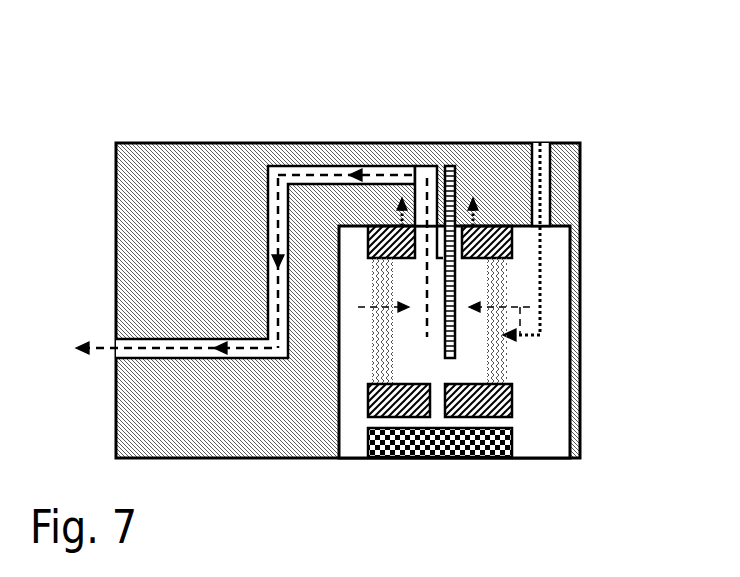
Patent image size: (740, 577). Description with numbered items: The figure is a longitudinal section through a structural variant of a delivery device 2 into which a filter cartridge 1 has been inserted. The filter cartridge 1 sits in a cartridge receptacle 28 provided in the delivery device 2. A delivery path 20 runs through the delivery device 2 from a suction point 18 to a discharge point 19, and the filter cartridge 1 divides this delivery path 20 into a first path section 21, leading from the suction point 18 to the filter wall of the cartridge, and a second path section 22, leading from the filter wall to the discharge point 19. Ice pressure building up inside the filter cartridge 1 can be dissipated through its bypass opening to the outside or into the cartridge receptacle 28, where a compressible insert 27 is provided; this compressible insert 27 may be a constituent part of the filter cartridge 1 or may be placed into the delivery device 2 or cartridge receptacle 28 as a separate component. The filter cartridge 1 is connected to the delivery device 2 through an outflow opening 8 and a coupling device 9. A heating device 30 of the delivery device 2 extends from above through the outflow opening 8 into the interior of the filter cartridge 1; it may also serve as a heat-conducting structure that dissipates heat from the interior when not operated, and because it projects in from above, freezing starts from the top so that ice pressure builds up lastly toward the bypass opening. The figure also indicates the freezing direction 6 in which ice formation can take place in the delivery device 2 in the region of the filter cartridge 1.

The filter cartridge 1 is at (512, 397).
The delivery device 2 is at (592, 120).
The freezing direction 6 is at (530, 357).
The outflow opening 8 is at (422, 237).
The coupling device 9 is at (475, 202).
The suction point 18 is at (543, 143).
The discharge point 19 is at (115, 342).
The delivery path 20 is at (286, 173).
The first path section 21 is at (538, 317).
The second path section 22 is at (365, 168).
The compressible insert 27 is at (463, 448).
The cartridge receptacle 28 is at (359, 408).
The heating device 30 is at (452, 165).